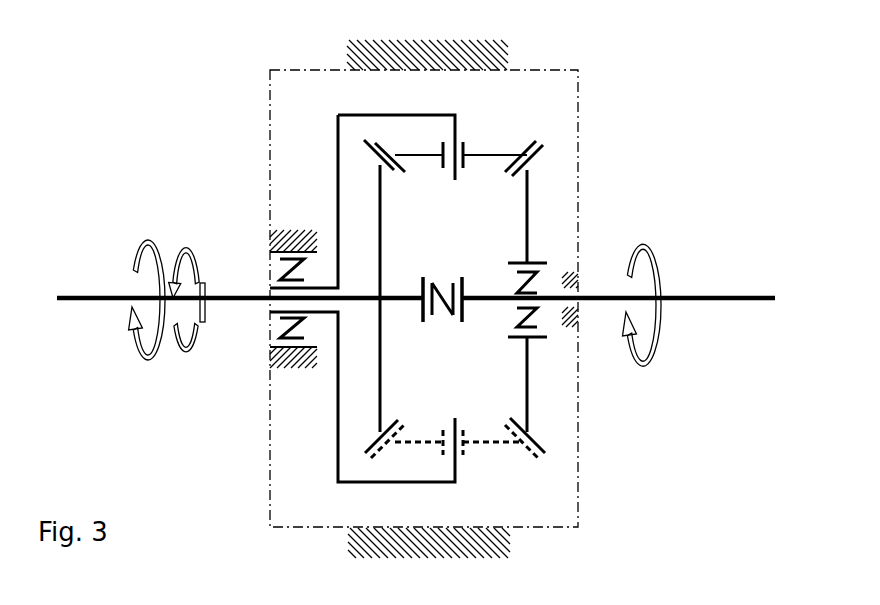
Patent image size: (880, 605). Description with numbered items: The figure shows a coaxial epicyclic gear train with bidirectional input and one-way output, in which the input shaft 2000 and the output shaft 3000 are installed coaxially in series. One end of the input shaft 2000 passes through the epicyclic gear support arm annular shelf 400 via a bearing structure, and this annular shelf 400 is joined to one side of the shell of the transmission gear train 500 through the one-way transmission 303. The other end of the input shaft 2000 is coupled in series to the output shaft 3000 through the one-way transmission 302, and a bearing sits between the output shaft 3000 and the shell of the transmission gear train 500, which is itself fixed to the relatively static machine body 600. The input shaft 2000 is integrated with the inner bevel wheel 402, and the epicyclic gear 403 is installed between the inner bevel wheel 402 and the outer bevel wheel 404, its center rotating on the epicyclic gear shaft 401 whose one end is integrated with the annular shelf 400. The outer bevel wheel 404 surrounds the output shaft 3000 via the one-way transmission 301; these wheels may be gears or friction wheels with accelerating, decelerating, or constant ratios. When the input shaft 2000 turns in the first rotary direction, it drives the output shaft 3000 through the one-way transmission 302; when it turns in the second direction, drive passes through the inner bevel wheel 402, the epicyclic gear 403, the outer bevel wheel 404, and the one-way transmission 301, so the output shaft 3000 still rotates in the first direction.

The input shaft 2000 is at (97, 295).
The output shaft 3000 is at (708, 293).
The shell of the transmission gear train 500 is at (268, 148).
The machine body 600 is at (423, 62).
The epicyclic gear support arm annular shelf 400 is at (338, 207).
The epicyclic gear shaft 401 is at (457, 138).
The inner bevel wheel 402 is at (400, 418).
The epicyclic gear 403 is at (532, 145).
The outer bevel wheel 404 is at (547, 155).
The one-way transmission 301 is at (508, 325).
The one-way transmission 302 is at (437, 290).
The one-way transmission 303 is at (272, 270).